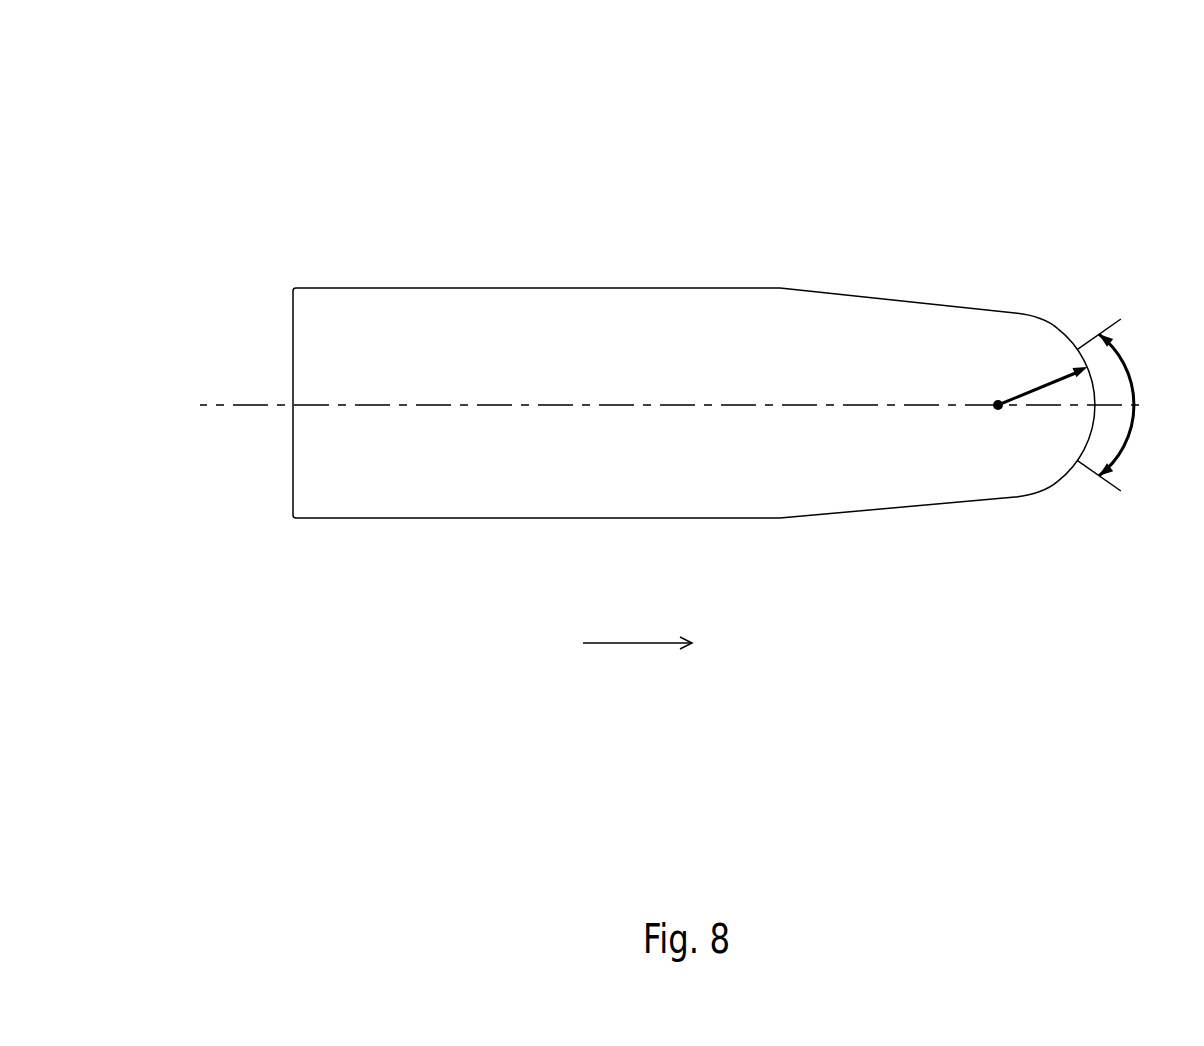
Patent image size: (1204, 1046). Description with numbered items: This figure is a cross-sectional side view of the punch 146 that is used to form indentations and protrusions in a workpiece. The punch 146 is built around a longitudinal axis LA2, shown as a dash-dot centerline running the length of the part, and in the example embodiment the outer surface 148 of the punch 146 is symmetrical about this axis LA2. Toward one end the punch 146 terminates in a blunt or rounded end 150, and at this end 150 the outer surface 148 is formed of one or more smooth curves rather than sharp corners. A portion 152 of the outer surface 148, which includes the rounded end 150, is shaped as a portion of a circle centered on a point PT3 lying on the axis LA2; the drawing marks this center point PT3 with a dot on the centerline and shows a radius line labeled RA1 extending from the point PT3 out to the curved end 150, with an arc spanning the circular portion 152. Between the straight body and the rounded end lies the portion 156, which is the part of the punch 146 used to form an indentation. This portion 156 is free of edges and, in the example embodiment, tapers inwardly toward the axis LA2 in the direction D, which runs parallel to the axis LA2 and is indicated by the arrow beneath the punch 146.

The punch 146 is at (825, 138).
The outer surface 148 is at (480, 285).
The portion 156 is at (913, 300).
The blunt or rounded end 150 is at (1097, 403).
The portion of surface 152 is at (1130, 437).
The tip radius RA1 is at (1040, 382).
The point PT3 is at (996, 402).
The longitudinal axis LA2 is at (247, 404).
The direction D is at (625, 643).